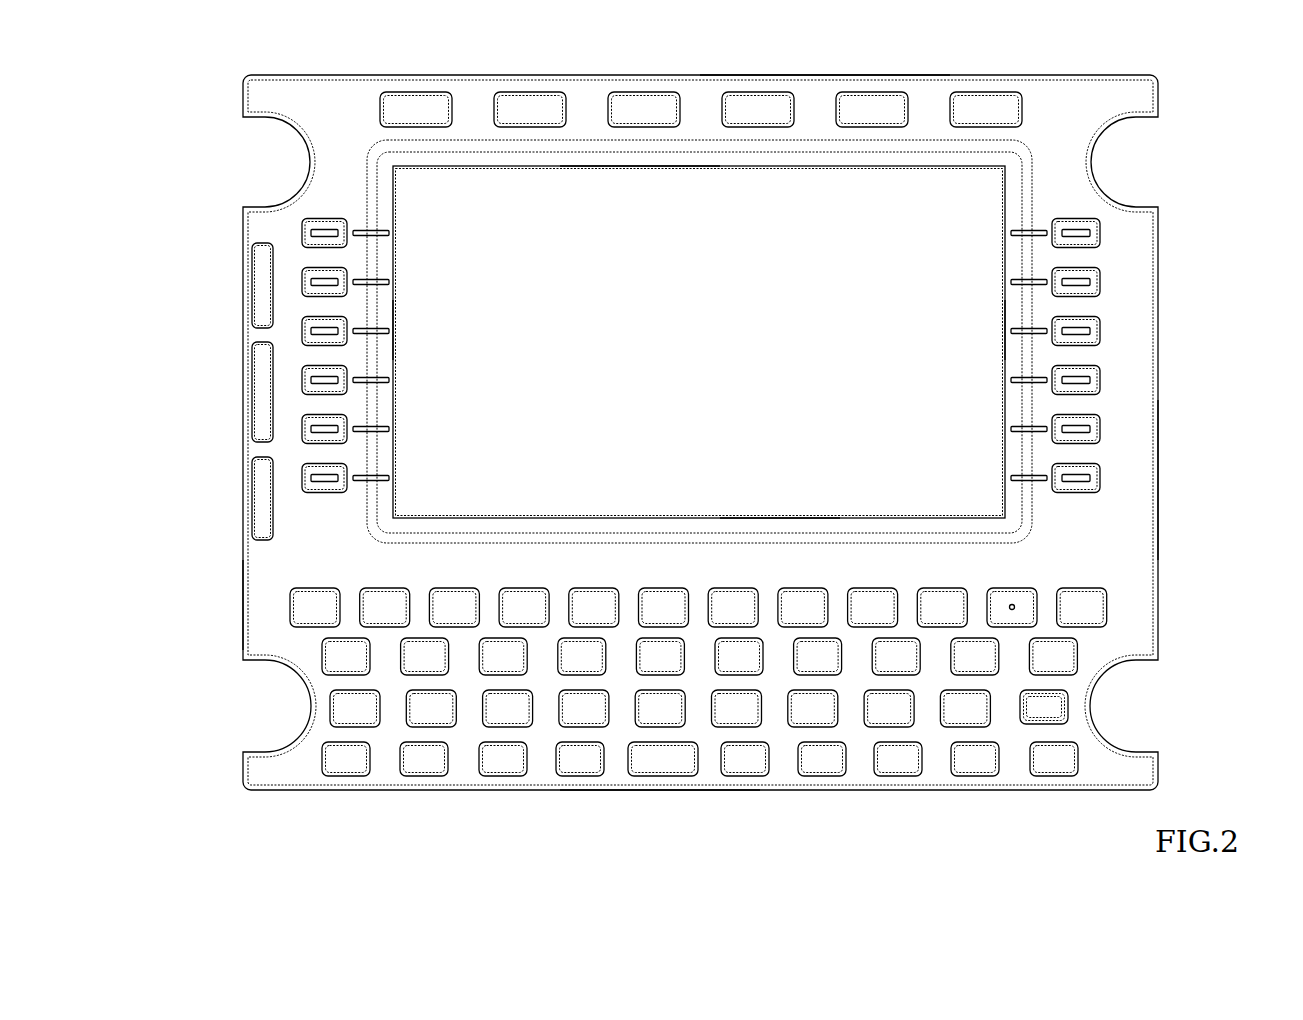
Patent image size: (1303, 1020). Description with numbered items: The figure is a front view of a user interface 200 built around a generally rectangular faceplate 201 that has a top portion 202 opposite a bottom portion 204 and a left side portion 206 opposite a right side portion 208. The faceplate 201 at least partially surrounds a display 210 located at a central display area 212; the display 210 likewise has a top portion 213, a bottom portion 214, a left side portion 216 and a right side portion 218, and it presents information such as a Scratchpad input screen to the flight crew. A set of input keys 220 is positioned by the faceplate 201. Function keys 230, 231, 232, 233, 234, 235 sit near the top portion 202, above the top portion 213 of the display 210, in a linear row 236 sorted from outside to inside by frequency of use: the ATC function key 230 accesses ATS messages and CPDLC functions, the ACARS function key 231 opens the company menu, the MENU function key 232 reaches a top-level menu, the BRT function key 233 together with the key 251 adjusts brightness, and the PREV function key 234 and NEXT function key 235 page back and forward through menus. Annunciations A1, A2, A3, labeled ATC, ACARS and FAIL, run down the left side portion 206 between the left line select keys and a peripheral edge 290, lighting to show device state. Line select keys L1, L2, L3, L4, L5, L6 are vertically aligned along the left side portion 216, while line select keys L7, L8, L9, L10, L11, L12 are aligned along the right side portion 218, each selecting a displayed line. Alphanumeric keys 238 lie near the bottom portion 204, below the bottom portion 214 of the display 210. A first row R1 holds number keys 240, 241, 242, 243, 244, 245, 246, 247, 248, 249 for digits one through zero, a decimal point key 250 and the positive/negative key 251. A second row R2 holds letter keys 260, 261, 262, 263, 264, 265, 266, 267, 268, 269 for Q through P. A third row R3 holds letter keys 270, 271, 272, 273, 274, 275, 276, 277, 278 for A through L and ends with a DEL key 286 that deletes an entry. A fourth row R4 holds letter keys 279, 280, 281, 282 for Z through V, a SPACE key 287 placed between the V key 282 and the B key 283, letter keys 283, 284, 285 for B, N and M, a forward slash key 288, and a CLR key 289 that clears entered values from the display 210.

The user interface 200 is at (268, 52).
The faceplate 201 is at (340, 102).
The top portion 202 is at (808, 100).
The bottom portion 204 is at (632, 792).
The left side portion 206 is at (250, 572).
The right side portion 208 is at (1130, 476).
The display 210 is at (718, 349).
The display area 212 is at (1032, 508).
The top portion 213 is at (632, 168).
The bottom portion 214 is at (781, 518).
The left side portion 216 is at (392, 330).
The right side portion 218 is at (1003, 330).
The input keys 220 is at (300, 763).
The ATC function key 230 is at (412, 92).
The ACARS function key 231 is at (528, 92).
The MENU function key 232 is at (642, 92).
The BRT function key 233 is at (756, 92).
The PREV function key 234 is at (868, 92).
The NEXT function key 235 is at (982, 92).
The linear row 236 is at (1035, 105).
The alphanumeric keys 238 is at (288, 605).
The number key 240 is at (310, 588).
The number key 241 is at (380, 588).
The number key 242 is at (449, 588).
The number key 243 is at (519, 588).
The number key 244 is at (589, 588).
The number key 245 is at (658, 588).
The number key 246 is at (728, 588).
The number key 247 is at (798, 588).
The number key 248 is at (867, 588).
The number key 249 is at (937, 588).
The key 250 is at (1006, 588).
The key 251 is at (1076, 588).
The letter key 260 is at (320, 657).
The letter key 261 is at (422, 639).
The letter key 262 is at (500, 639).
The letter key 263 is at (580, 639).
The letter key 264 is at (658, 639).
The letter key 265 is at (738, 639).
The letter key 266 is at (820, 639).
The letter key 267 is at (896, 639).
The letter key 268 is at (976, 639).
The letter key 269 is at (1078, 665).
The letter key 270 is at (375, 728).
The letter key 271 is at (452, 728).
The letter key 272 is at (530, 728).
The letter key 273 is at (606, 728).
The letter key 274 is at (688, 728).
The letter key 275 is at (764, 728).
The letter key 276 is at (842, 728).
The letter key 277 is at (920, 728).
The letter key 278 is at (992, 728).
The letter key 279 is at (350, 776).
The letter key 280 is at (428, 776).
The letter key 281 is at (507, 776).
The letter key 282 is at (585, 776).
The letter key 283 is at (753, 776).
The letter key 284 is at (831, 776).
The letter key 285 is at (909, 776).
The DEL key 286 is at (1068, 715).
The SPACE key 287 is at (676, 776).
The forward slash key 288 is at (988, 776).
The CLR key 289 is at (1060, 776).
The peripheral edge 290 is at (250, 385).
The annunciation A1 is at (254, 275).
The annunciation A2 is at (254, 375).
The annunciation A3 is at (254, 475).
The line select key L1 is at (342, 228).
The line select key L2 is at (342, 277).
The line select key L3 is at (342, 326).
The line select key L4 is at (342, 375).
The line select key L5 is at (342, 424).
The line select key L6 is at (342, 473).
The line select key L7 is at (1060, 228).
The line select key L8 is at (1060, 277).
The line select key L9 is at (1060, 326).
The line select key L10 is at (1060, 375).
The line select key L11 is at (1060, 424).
The line select key L12 is at (1060, 473).
The first linear row R1 is at (1125, 605).
The second linear row R2 is at (1092, 660).
The third linear row R3 is at (1078, 707).
The fourth linear row R4 is at (1092, 768).